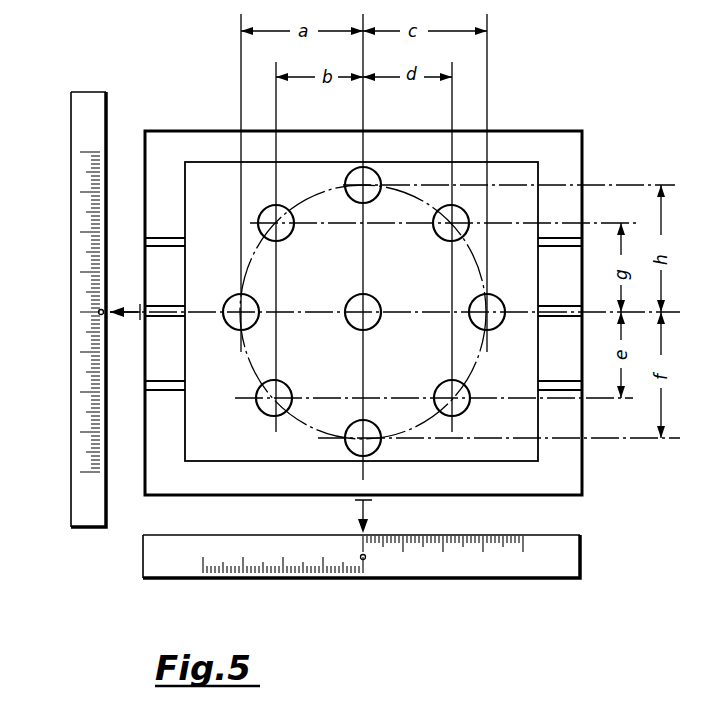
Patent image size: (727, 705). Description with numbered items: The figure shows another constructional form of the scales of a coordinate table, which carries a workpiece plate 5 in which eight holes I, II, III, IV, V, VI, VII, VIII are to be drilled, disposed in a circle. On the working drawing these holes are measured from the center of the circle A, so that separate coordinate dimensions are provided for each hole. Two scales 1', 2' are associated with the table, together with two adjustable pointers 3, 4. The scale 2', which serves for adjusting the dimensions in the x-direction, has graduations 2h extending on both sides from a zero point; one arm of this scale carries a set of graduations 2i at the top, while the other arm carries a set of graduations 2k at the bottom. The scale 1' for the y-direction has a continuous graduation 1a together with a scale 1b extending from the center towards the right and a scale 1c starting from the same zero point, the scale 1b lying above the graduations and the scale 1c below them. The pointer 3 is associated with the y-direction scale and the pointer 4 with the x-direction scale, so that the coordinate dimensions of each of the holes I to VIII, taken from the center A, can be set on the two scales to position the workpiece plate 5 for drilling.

The continuous graduation 1a is at (100, 220).
The scale 1b is at (70, 176).
The scale 1c is at (100, 410).
The scale 1' is at (117, 285).
The scale 2' is at (361, 575).
The graduations 2h is at (517, 575).
The set of graduations 2i is at (437, 540).
The set of graduations 2k is at (294, 573).
The adjustable pointer 3 is at (124, 318).
The adjustable pointer 4 is at (366, 505).
The workpiece plate 5 is at (548, 145).
The center of the circle A is at (368, 306).
The hole I is at (325, 170).
The hole II is at (480, 214).
The hole III is at (516, 297).
The hole IV is at (492, 385).
The hole V is at (398, 425).
The hole VI is at (318, 387).
The hole VII is at (278, 339).
The hole VIII is at (320, 249).